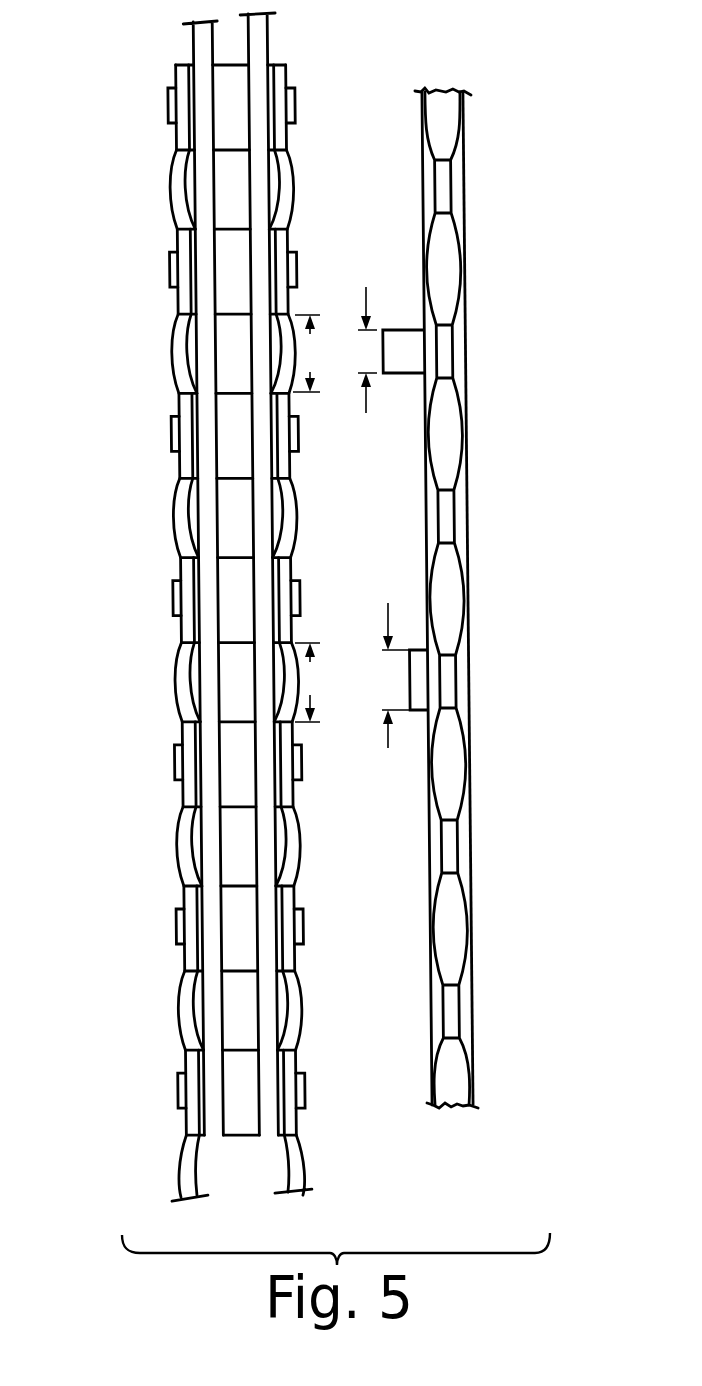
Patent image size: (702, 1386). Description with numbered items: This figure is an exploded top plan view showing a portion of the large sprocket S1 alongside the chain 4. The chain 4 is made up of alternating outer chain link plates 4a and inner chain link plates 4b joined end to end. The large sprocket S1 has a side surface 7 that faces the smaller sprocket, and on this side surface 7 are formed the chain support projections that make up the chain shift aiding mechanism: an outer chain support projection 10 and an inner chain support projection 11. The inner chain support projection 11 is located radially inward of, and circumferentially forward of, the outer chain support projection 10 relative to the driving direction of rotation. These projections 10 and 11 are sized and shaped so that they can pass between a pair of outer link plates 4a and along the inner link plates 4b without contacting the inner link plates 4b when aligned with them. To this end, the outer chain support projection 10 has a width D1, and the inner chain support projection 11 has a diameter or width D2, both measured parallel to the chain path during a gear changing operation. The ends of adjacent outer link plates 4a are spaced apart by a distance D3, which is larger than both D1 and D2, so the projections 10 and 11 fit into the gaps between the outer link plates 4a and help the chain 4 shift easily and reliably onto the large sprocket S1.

The chain 4 is at (174, 607).
The outer chain link plates 4a is at (277, 518).
The inner chain link plates 4b is at (252, 362).
The side surface 7 is at (421, 139).
The outer chain support projection 10 is at (418, 636).
The inner chain support projection 11 is at (407, 318).
The large sprocket S1 is at (480, 852).
The width of outer chain support projection D1 is at (391, 675).
The width of inner chain support projection D2 is at (369, 332).
The distance between ends of adjacent outer link plates D3 is at (310, 518).